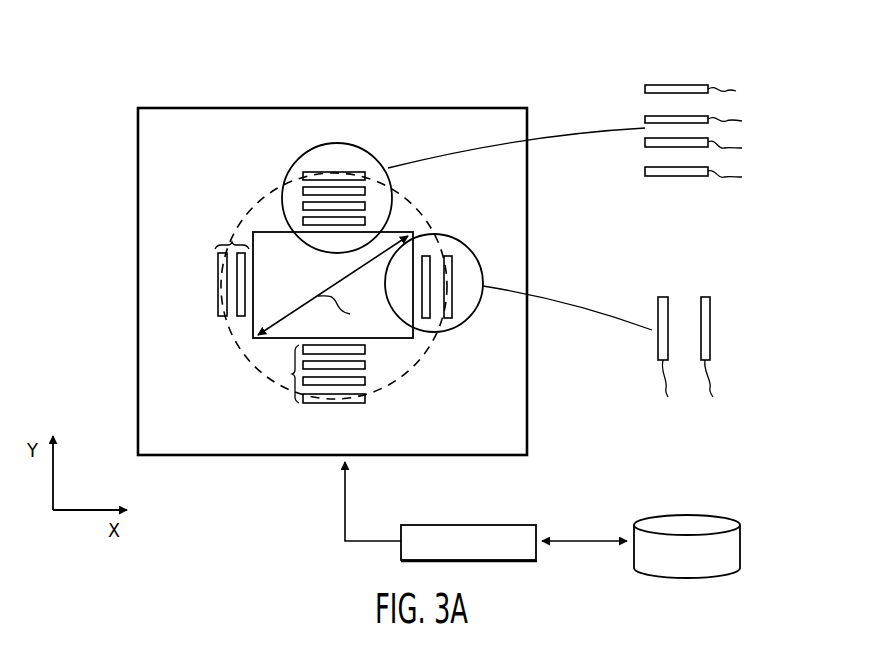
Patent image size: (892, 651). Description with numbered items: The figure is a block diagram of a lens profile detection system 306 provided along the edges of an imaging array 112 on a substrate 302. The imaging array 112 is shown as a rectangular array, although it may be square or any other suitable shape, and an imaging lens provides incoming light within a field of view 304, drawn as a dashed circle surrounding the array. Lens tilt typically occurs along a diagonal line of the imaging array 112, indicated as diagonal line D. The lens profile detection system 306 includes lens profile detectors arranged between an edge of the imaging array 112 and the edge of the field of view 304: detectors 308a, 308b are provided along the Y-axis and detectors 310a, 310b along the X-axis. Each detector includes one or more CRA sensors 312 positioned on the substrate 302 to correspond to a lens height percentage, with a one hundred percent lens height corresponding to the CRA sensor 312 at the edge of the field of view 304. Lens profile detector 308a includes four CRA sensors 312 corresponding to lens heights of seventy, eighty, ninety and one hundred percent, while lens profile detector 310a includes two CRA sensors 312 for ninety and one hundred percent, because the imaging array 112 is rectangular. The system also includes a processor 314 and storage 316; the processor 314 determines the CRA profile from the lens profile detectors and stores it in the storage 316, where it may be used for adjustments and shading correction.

The substrate 302 is at (138, 162).
The field of view 304 is at (414, 368).
The lens profile detection system 306 is at (226, 190).
The lens profile detector 308a is at (340, 143).
The lens profile detector 308b is at (292, 374).
The lens profile detector 310a is at (463, 238).
The lens profile detector 310b is at (230, 245).
The imaging array 112 is at (414, 340).
The CRA sensor 312 is at (683, 76).
The processor 314 is at (493, 525).
The storage 316 is at (705, 513).